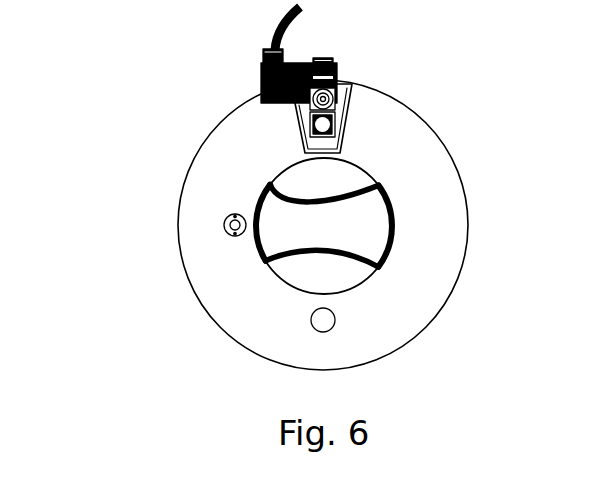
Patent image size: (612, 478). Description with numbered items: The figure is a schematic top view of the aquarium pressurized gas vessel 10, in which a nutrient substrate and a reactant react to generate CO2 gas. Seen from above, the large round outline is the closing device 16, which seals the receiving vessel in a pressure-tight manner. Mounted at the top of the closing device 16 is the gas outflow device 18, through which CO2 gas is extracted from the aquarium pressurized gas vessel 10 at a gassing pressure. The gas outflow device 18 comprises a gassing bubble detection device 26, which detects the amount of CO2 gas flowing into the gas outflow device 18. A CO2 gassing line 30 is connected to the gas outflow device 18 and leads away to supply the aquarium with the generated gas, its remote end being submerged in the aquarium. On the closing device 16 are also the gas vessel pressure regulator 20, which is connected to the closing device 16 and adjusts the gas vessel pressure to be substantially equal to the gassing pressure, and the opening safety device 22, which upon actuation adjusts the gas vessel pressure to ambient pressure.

The aquarium pressurized gas vessel 10 is at (176, 140).
The closing device 16 is at (235, 316).
The gas outflow device 18 is at (325, 125).
The gas vessel pressure regulator 20 is at (335, 320).
The opening safety device 22 is at (224, 226).
The gassing bubble detection device 26 is at (328, 99).
The CO2 gassing line 30 is at (268, 37).